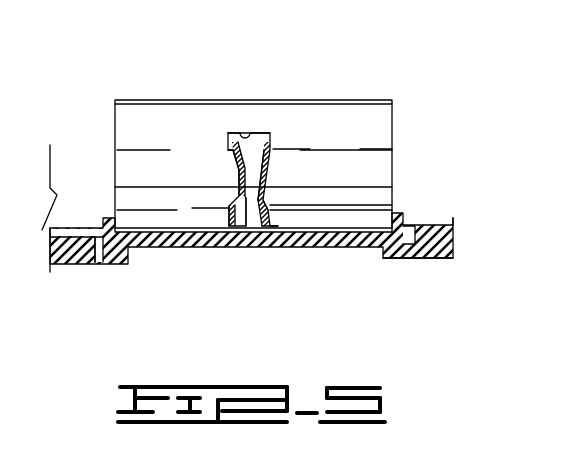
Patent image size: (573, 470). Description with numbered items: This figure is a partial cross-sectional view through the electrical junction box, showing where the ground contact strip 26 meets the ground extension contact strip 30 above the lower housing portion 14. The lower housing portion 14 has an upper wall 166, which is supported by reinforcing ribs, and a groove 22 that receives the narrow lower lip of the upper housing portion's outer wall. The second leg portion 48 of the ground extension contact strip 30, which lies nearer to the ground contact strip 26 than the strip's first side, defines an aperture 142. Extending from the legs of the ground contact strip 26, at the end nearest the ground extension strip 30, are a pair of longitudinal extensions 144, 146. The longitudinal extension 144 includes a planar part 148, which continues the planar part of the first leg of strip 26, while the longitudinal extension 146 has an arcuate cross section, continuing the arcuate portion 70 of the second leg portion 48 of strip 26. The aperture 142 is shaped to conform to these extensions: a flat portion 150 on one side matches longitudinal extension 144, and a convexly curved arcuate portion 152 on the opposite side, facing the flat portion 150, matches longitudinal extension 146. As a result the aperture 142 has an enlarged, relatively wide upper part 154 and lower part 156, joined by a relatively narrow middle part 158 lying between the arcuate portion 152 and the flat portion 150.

The lower housing portion 14 is at (455, 237).
The groove 22 is at (98, 245).
The ground contact strip 26 is at (227, 158).
The ground extension contact strip 30 is at (303, 100).
The second leg portion 48 is at (373, 128).
The arcuate portion 70 is at (373, 178).
The aperture 142 is at (238, 135).
The longitudinal extension 144 is at (233, 203).
The longitudinal extension 146 is at (453, 218).
The planar part 148 is at (239, 189).
The flat portion 150 is at (244, 200).
The arcuate portion 152 is at (255, 157).
The upper part 154 is at (262, 170).
The lower part 156 is at (262, 228).
The middle part 158 is at (268, 207).
The upper wall 166 is at (358, 248).